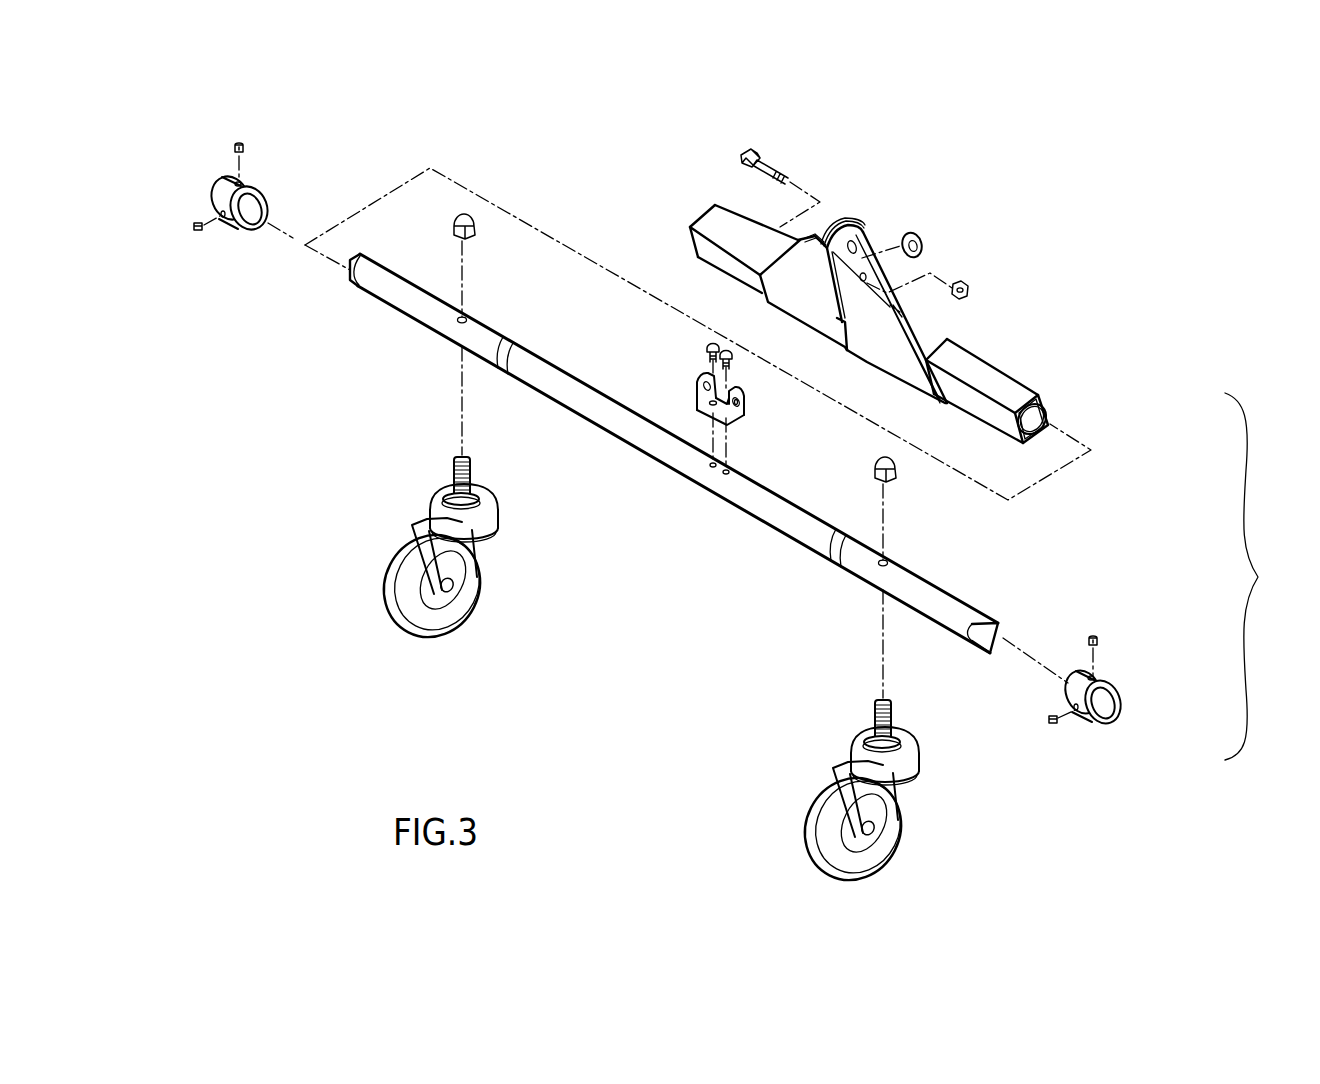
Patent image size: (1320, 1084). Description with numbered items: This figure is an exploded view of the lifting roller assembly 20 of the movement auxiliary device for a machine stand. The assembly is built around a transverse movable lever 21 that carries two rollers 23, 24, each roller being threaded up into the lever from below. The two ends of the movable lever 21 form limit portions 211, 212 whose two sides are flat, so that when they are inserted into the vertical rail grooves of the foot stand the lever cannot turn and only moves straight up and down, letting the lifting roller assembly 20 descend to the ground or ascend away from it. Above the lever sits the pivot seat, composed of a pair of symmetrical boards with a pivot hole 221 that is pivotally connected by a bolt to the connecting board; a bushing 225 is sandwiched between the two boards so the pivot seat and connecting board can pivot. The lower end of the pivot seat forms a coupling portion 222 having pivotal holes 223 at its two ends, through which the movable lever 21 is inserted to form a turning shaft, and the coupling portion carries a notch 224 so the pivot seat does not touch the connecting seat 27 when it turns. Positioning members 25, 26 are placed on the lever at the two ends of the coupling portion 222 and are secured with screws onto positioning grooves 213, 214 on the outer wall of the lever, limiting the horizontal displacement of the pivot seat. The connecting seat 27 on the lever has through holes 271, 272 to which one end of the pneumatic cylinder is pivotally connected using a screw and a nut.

The lifting roller assembly 20 is at (1261, 576).
The movable lever 21 is at (403, 298).
The limit portion 211 is at (347, 272).
The limit portion 212 is at (982, 637).
The positioning groove 213 is at (497, 345).
The positioning groove 214 is at (832, 560).
The pivot hole 221 is at (853, 224).
The coupling portion 222 is at (982, 380).
The pivotal hole 223 is at (1040, 412).
The notch 224 is at (925, 331).
The bushing 225 is at (913, 233).
The roller 23 is at (415, 590).
The roller 24 is at (838, 818).
The positioning member 25 is at (222, 192).
The positioning member 26 is at (1102, 704).
The connecting seat 27 is at (703, 410).
The through hole 271 is at (697, 378).
The through hole 272 is at (743, 402).